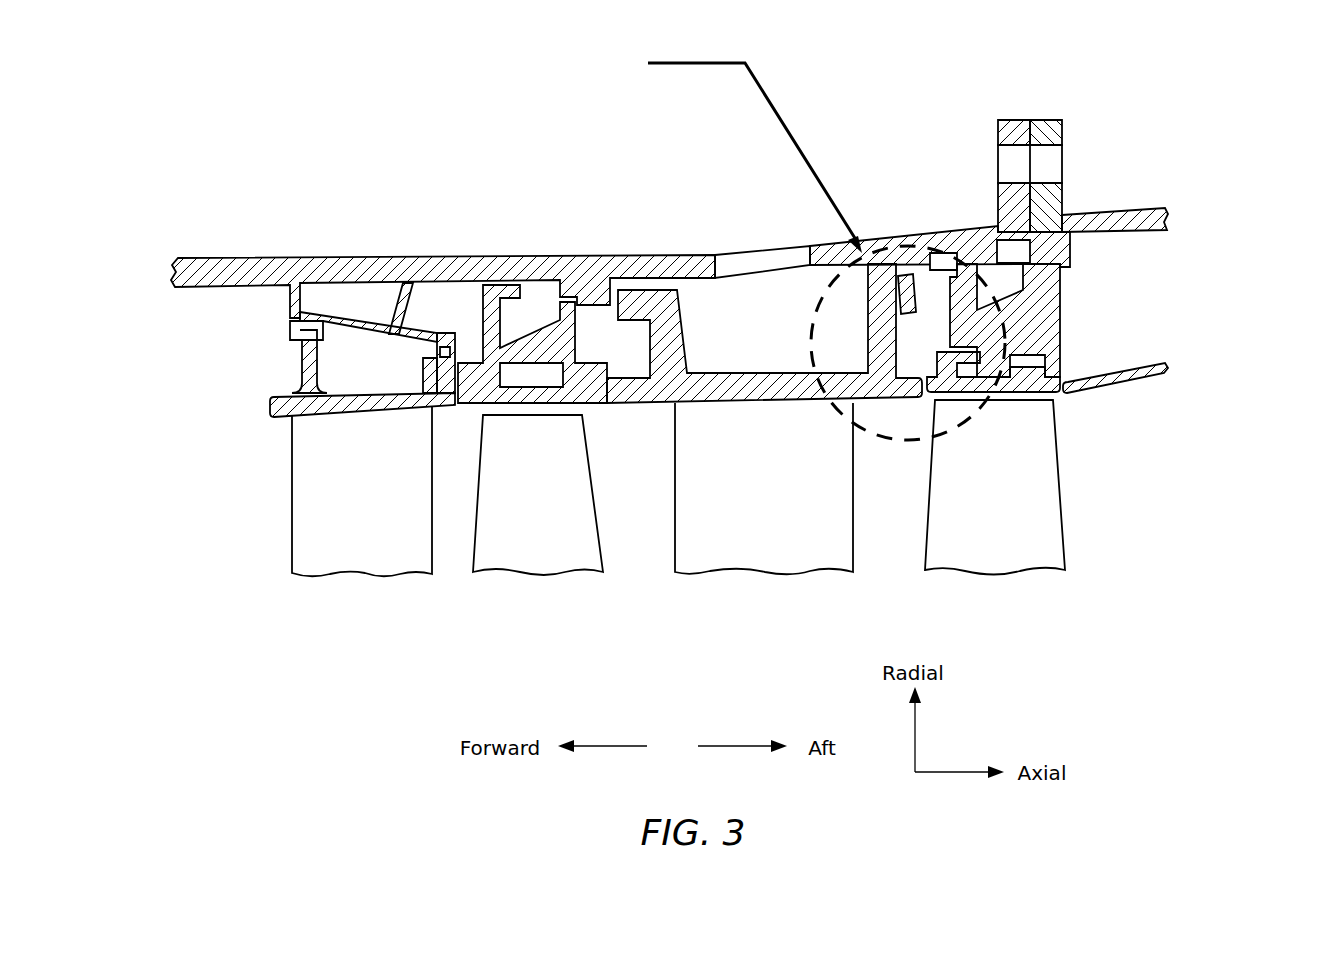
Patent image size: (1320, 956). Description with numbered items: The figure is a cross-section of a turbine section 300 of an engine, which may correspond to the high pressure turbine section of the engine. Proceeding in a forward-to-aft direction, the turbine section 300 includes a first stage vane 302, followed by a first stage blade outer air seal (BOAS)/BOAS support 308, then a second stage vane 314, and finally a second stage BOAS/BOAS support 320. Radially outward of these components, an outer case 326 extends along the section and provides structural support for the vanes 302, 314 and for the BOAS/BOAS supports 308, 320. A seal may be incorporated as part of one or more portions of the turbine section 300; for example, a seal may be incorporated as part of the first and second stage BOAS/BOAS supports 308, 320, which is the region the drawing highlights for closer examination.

The turbine section 300 is at (704, 359).
The first stage vane 302 is at (362, 532).
The first stage blade outer air seal (BOAS)/BOAS support 308 is at (470, 385).
The second stage vane 314 is at (773, 440).
The second stage BOAS/BOAS support 320 is at (985, 380).
The outer case 326 is at (705, 254).